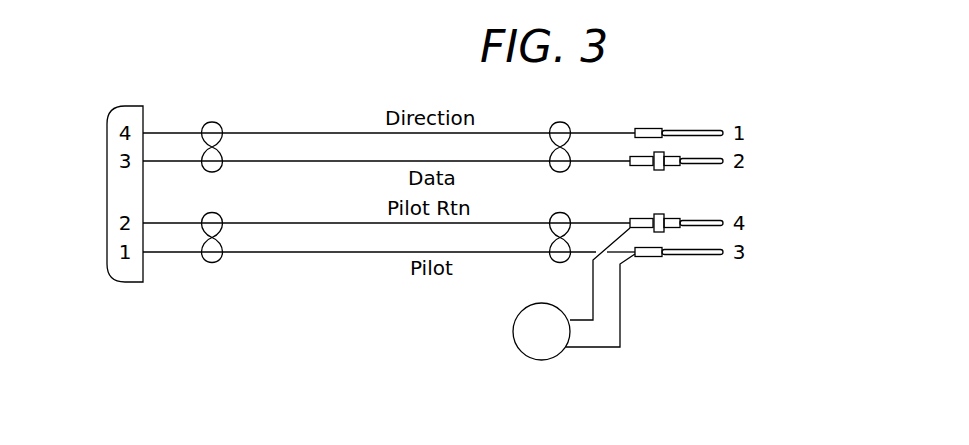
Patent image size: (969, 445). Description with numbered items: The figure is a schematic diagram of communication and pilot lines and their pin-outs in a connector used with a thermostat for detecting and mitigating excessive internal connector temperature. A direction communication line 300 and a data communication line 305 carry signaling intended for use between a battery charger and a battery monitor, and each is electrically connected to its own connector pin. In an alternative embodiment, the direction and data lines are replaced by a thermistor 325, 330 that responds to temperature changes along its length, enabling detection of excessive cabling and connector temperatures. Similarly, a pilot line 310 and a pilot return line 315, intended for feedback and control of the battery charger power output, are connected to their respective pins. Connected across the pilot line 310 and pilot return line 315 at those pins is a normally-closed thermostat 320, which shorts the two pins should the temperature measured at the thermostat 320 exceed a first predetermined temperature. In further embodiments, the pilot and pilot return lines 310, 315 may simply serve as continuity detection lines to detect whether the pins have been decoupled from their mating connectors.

The direction communication line 300 is at (389, 98).
The thermistor 325 is at (258, 130).
The data communication line 305 is at (386, 112).
The thermistor 330 is at (344, 157).
The pilot line 310 is at (272, 253).
The pilot return line 315 is at (308, 223).
The normally-closed thermostat 320 is at (513, 332).